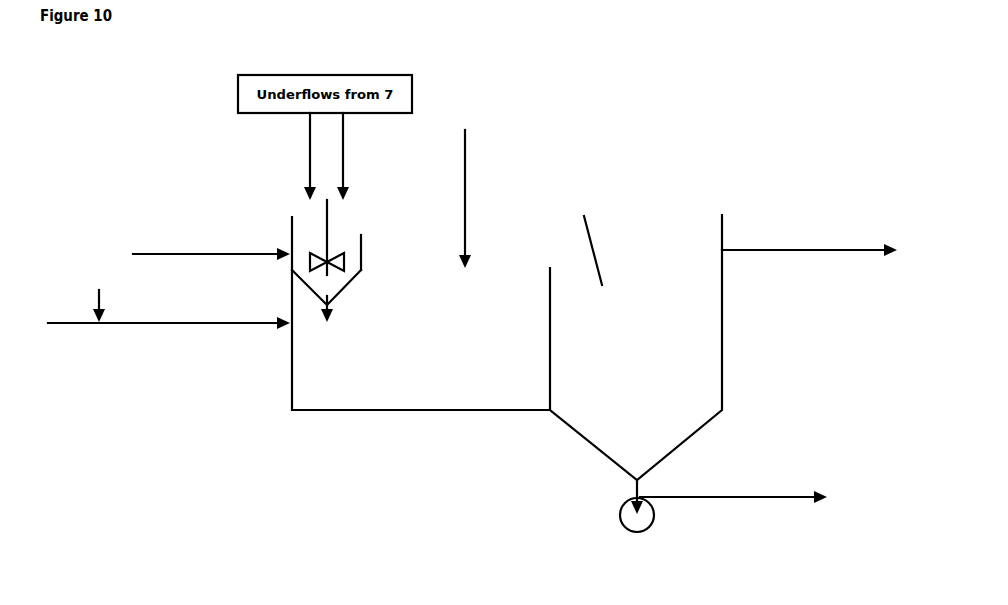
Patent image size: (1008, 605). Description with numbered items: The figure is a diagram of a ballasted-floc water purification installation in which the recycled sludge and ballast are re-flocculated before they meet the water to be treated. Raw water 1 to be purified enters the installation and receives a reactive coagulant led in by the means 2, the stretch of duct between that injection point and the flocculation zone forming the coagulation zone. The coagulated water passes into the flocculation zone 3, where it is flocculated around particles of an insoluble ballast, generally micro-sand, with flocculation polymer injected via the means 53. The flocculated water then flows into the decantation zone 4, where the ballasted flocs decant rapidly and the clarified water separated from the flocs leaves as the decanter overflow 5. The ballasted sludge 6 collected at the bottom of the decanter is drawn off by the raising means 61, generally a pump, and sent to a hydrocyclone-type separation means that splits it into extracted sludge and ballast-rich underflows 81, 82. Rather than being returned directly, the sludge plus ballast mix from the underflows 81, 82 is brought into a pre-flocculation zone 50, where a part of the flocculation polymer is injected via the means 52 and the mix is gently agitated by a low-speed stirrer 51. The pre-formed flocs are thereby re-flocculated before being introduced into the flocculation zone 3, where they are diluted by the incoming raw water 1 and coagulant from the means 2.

The raw water intake 1 is at (161, 347).
The reactive coagulant means 2 is at (77, 288).
The flocculation zone 3 is at (421, 313).
The decantation zone 4 is at (636, 347).
The decanter overflow 5 is at (809, 227).
The ballasted sludge 6 is at (733, 473).
The pre-flocculation zone 50 is at (361, 245).
The low-speed stirrer 51 is at (344, 258).
The flocculation polymer injection means 52 is at (178, 230).
The flocculation polymer injection means 53 is at (530, 181).
The raising means 61 is at (663, 523).
The underflow 81 is at (277, 156).
The underflow 82 is at (374, 156).